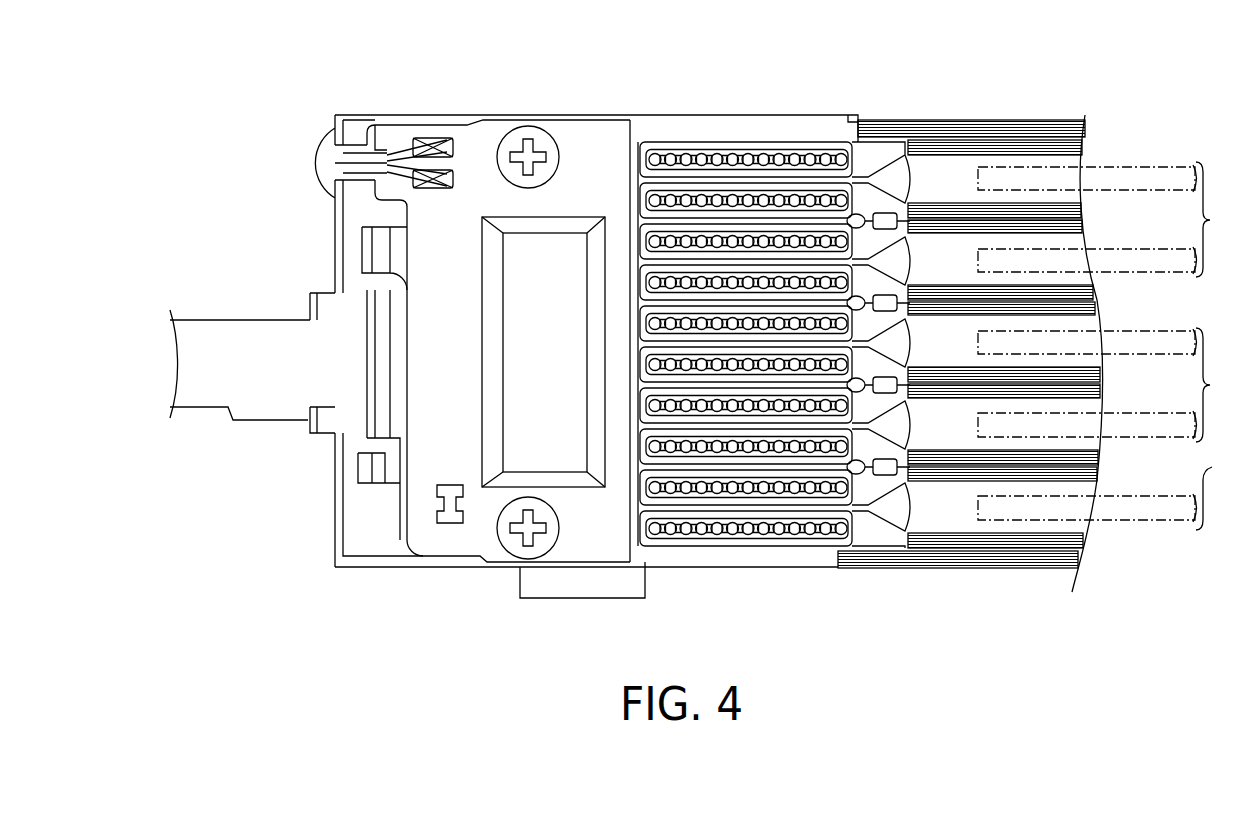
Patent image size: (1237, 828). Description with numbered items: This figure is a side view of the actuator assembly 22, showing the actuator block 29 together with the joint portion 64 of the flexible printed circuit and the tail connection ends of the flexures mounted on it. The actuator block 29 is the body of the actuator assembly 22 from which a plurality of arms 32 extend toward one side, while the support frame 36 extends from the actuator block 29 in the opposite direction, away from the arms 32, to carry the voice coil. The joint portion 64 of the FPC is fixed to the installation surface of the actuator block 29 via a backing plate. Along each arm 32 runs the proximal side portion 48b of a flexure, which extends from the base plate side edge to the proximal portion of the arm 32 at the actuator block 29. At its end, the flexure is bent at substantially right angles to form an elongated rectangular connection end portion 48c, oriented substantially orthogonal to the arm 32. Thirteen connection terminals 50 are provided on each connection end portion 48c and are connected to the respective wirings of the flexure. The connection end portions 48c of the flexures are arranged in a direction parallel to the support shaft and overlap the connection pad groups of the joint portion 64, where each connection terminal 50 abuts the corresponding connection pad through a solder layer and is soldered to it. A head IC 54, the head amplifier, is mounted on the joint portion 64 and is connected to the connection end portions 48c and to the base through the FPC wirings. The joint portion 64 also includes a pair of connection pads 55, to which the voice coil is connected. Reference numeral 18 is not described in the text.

The cable group 18 is at (1216, 346).
The actuator assembly 22 is at (906, 95).
The actuator block 29 is at (393, 121).
The arm 32 is at (1026, 136).
The support frame 36 is at (208, 342).
The proximal side portion 48b is at (1073, 170).
The connection end portion 48c is at (640, 200).
The connection terminal 50 is at (693, 150).
The head IC 54 is at (512, 373).
The connection pad 55 is at (448, 147).
The joint portion 64 is at (583, 139).